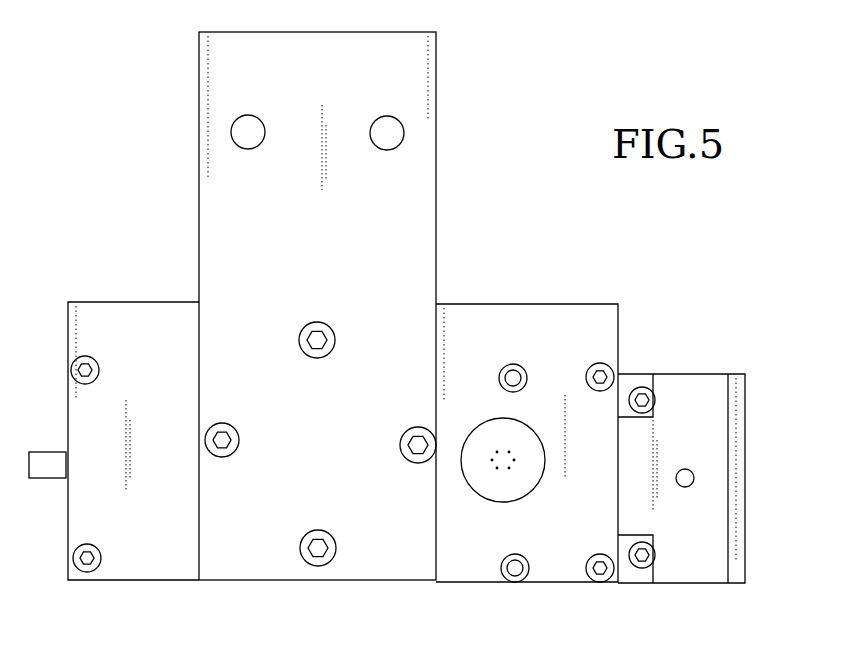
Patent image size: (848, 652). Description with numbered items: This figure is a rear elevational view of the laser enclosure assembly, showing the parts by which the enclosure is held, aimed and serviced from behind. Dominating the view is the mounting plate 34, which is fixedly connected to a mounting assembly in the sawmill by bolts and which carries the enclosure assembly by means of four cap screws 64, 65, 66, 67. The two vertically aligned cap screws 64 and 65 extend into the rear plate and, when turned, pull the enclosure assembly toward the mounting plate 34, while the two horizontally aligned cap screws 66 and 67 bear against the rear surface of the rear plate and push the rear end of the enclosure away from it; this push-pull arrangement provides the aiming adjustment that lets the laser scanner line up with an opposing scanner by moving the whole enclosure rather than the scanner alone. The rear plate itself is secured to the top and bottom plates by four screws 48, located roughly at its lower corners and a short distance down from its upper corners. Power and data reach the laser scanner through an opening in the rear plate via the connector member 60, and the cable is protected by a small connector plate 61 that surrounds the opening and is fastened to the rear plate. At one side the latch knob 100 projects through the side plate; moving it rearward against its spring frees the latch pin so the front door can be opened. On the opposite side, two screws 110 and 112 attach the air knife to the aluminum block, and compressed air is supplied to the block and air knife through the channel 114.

The mounting plate 34 is at (430, 158).
The screws 48 is at (99, 368).
The connector member 60 is at (537, 470).
The connector plate 61 is at (578, 318).
The cap screw 64 is at (329, 326).
The cap screw 65 is at (330, 533).
The cap screw 66 is at (240, 436).
The cap screw 67 is at (418, 426).
The latch knob 100 is at (46, 470).
The screw 110 is at (650, 388).
The screw 112 is at (652, 562).
The channel 114 is at (694, 475).